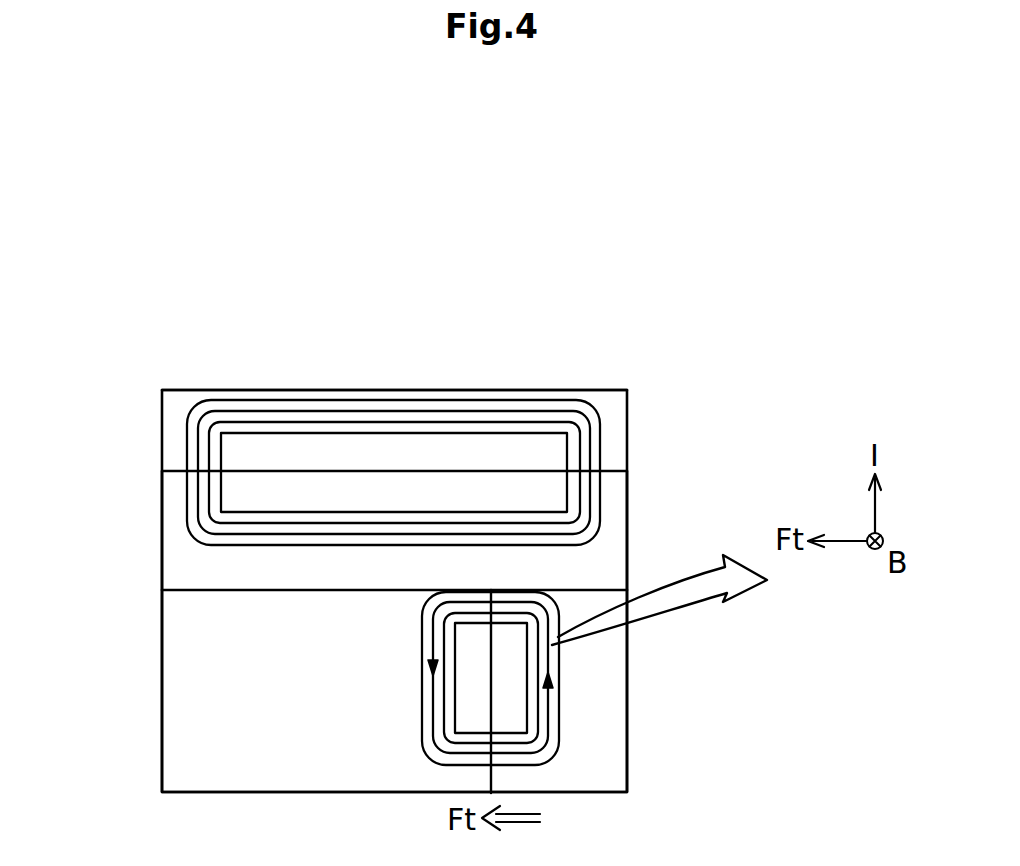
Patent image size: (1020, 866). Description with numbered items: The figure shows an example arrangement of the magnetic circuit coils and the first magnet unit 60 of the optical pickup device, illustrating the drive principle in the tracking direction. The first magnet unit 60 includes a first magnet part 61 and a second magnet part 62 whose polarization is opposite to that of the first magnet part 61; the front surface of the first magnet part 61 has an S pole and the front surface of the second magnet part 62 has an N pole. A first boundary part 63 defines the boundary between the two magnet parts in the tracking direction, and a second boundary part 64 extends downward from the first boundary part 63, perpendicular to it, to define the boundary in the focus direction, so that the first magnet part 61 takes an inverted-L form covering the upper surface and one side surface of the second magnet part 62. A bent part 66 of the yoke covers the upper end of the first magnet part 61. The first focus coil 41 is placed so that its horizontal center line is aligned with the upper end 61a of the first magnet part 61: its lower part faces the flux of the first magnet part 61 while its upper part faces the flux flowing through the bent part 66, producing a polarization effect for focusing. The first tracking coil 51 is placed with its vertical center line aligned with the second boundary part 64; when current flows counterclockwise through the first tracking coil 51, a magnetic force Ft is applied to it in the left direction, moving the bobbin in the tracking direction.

The first focus coil 41 is at (297, 414).
The first tracking coil 51 is at (555, 668).
The first magnet unit 60 is at (603, 380).
The first magnet part 61 is at (185, 564).
The upper end of the first magnet part 61a is at (181, 470).
The second magnet part 62 is at (185, 702).
The first boundary part 63 is at (257, 591).
The second boundary part 64 is at (492, 712).
The bent part 66 is at (178, 406).